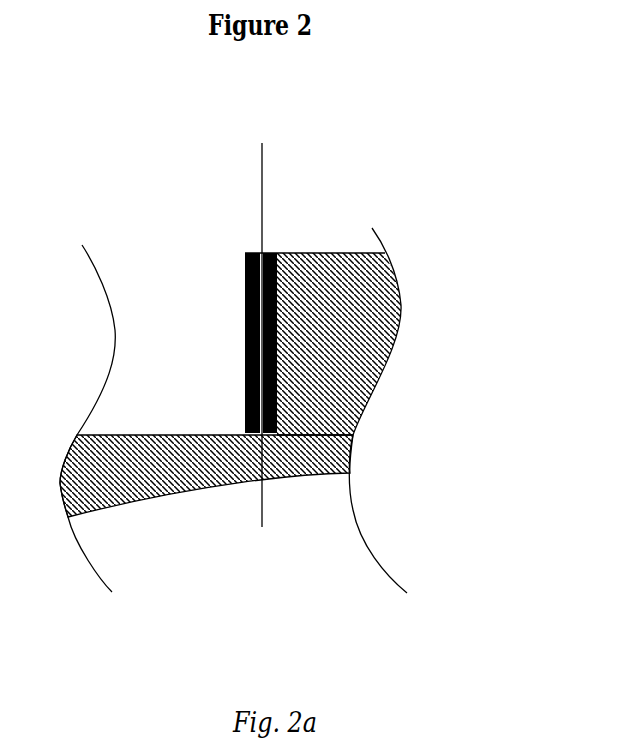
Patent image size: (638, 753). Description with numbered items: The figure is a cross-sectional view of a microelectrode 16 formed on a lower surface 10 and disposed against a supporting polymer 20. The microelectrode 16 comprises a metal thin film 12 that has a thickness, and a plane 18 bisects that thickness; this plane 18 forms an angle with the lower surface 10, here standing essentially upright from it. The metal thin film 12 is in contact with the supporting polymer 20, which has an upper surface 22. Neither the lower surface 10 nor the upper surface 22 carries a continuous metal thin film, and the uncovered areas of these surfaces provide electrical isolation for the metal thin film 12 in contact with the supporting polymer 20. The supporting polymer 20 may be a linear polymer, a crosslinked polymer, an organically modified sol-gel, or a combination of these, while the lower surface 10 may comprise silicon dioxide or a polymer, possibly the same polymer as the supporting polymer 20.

The lower surface 10 is at (121, 434).
The metal thin film 12 is at (251, 342).
The microelectrode 16 is at (188, 313).
The plane 18 is at (261, 141).
The supporting polymer 20 is at (325, 380).
The upper surface 22 is at (332, 253).